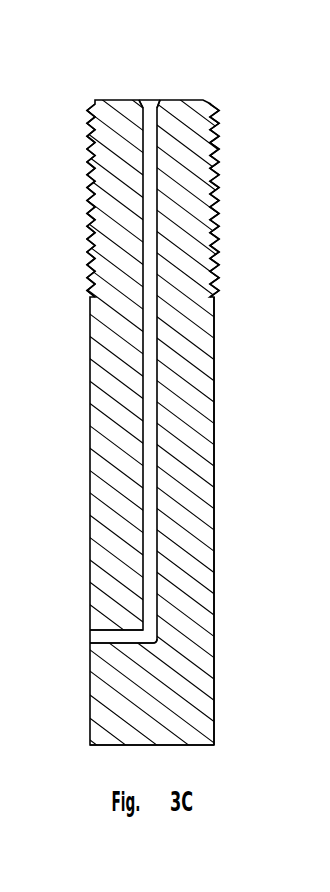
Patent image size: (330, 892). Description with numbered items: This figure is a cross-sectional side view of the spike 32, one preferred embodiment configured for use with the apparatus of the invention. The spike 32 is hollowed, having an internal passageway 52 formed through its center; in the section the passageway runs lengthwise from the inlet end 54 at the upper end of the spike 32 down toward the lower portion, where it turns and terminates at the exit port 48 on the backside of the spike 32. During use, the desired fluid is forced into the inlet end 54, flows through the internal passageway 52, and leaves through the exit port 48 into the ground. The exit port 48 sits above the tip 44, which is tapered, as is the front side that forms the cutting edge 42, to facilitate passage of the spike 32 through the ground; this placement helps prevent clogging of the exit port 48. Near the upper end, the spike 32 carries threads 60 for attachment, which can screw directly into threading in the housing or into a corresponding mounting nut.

The spike 32 is at (185, 92).
The cutting edge 42 is at (225, 455).
The tip 44 is at (210, 762).
The exit port 48 is at (97, 637).
The internal passageway 52 is at (147, 215).
The inlet end 54 is at (148, 102).
The threads 60 is at (230, 145).